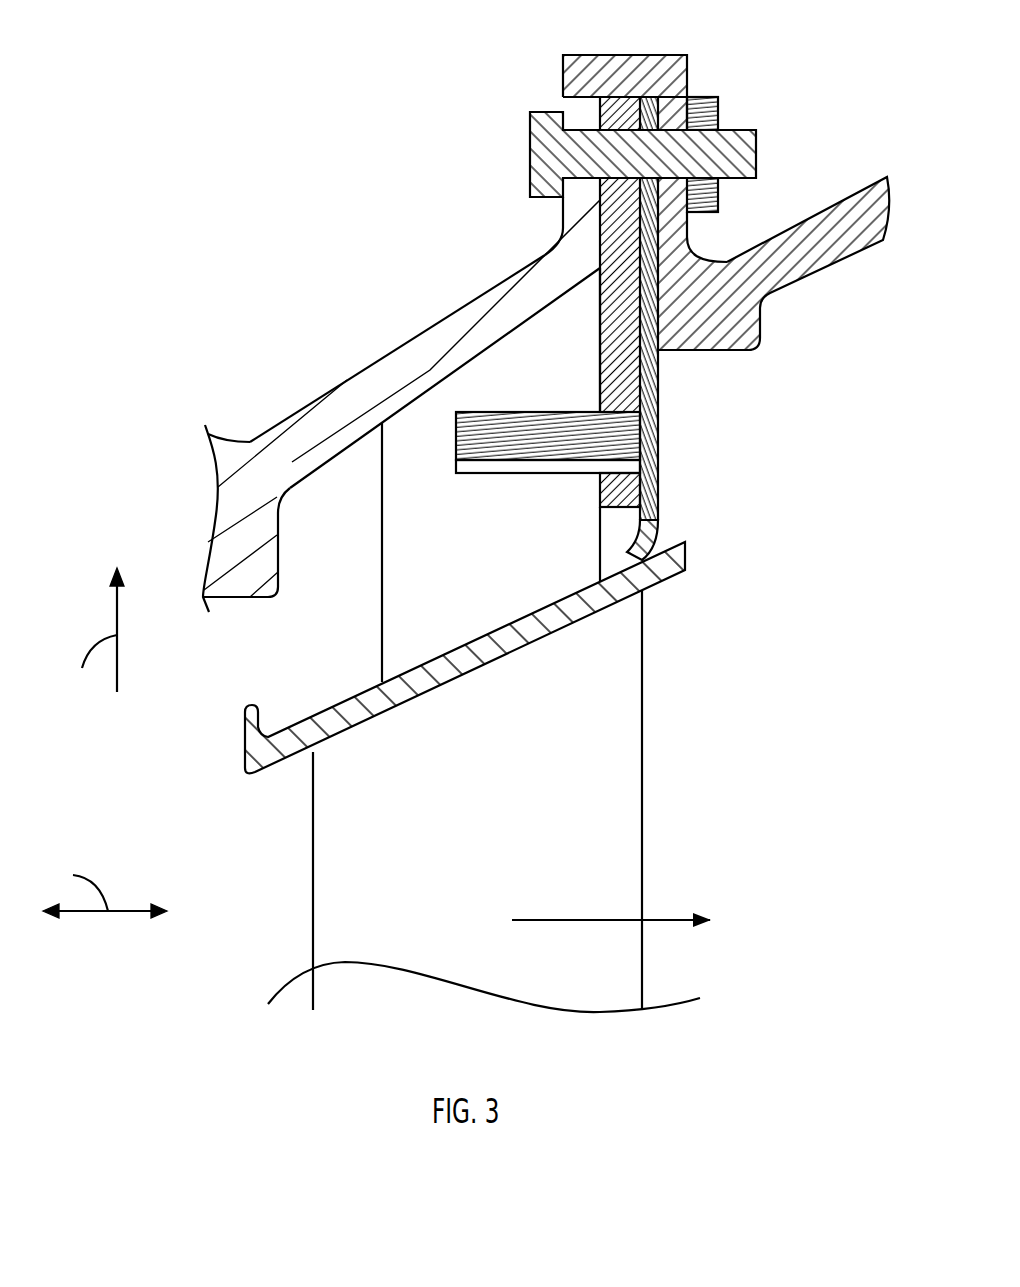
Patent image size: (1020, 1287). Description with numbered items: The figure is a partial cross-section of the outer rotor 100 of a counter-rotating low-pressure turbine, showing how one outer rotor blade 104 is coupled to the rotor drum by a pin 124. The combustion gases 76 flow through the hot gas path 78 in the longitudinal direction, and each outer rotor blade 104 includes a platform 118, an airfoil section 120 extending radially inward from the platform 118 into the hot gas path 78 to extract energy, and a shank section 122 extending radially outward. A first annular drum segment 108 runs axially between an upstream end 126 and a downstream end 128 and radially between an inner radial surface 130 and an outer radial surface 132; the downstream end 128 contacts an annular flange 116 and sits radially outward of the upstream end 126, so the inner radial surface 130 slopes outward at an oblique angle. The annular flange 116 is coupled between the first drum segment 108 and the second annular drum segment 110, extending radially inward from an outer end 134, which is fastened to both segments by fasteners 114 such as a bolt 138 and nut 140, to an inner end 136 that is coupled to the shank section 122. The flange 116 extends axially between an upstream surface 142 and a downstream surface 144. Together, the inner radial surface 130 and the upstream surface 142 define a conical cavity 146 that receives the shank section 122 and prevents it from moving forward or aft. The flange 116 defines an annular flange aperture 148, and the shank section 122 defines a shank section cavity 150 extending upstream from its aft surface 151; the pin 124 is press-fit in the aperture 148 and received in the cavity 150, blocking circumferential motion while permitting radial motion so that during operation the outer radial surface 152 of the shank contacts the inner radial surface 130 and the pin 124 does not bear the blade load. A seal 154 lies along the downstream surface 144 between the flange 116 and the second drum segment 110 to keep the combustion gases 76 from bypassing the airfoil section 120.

The combustion gases 76 is at (611, 896).
The hot gas path 78 is at (396, 881).
The outer rotor 100 is at (125, 506).
The outer rotor blade 104 is at (432, 899).
The first annular drum segment 108 is at (275, 456).
The second annular drum segment 110 is at (818, 246).
The fasteners 114 is at (698, 87).
The annular flange 116 is at (667, 308).
The platform 118 is at (492, 657).
The airfoil section 120 is at (671, 800).
The shank section 122 is at (331, 552).
The pin 124 is at (595, 436).
The upstream end 126 is at (207, 396).
The downstream end 128 is at (512, 186).
The inner radial surface 130 is at (445, 403).
The outer radial surface 132 is at (397, 348).
The outer end 134 is at (583, 92).
The inner end 136 is at (554, 538).
The bolt 138 is at (680, 154).
The nut 140 is at (729, 128).
The upstream surface 142 is at (591, 254).
The downstream surface 144 is at (737, 264).
The cavity 146 is at (515, 253).
The annular flange aperture 148 is at (580, 533).
The shank section cavity 150 is at (527, 494).
The aft surface 151 is at (572, 340).
The outer radial surface of shank 152 is at (446, 331).
The seal 154 is at (688, 522).